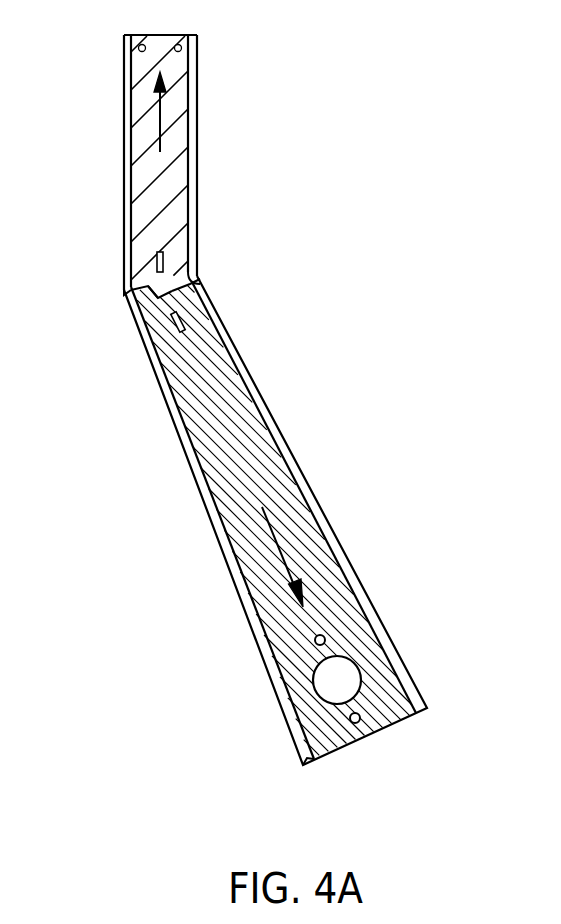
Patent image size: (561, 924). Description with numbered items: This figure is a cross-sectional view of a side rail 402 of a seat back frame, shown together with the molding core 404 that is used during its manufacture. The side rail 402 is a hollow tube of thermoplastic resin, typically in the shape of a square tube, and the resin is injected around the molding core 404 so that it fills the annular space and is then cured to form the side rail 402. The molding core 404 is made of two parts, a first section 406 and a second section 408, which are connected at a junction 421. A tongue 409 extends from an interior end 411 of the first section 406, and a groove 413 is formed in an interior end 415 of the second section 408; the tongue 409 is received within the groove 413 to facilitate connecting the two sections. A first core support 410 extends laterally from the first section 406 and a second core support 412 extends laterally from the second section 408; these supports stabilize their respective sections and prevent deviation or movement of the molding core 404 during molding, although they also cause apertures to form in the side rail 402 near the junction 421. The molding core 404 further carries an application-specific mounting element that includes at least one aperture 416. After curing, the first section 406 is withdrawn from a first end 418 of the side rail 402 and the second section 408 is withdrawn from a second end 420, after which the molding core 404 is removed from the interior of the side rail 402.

The side rail 402 is at (265, 398).
The molding core 404 is at (226, 496).
The first section 406 is at (167, 197).
The second section 408 is at (355, 618).
The tongue 409 is at (180, 277).
The first core support 410 is at (163, 260).
The interior end of the first section 411 is at (140, 287).
The second core support 412 is at (187, 325).
The groove 413 is at (198, 290).
The interior end of the second section 415 is at (142, 318).
The aperture 416 is at (316, 642).
The first end 418 is at (192, 42).
The second end 420 is at (305, 767).
The junction 421 is at (140, 287).